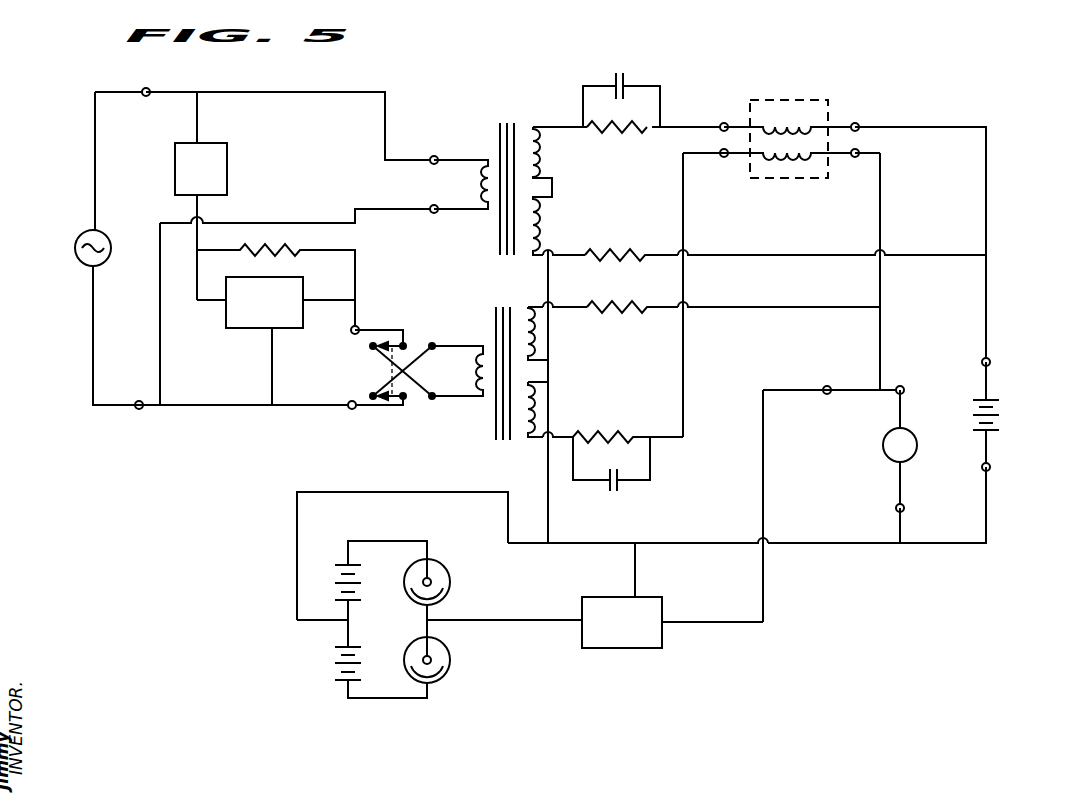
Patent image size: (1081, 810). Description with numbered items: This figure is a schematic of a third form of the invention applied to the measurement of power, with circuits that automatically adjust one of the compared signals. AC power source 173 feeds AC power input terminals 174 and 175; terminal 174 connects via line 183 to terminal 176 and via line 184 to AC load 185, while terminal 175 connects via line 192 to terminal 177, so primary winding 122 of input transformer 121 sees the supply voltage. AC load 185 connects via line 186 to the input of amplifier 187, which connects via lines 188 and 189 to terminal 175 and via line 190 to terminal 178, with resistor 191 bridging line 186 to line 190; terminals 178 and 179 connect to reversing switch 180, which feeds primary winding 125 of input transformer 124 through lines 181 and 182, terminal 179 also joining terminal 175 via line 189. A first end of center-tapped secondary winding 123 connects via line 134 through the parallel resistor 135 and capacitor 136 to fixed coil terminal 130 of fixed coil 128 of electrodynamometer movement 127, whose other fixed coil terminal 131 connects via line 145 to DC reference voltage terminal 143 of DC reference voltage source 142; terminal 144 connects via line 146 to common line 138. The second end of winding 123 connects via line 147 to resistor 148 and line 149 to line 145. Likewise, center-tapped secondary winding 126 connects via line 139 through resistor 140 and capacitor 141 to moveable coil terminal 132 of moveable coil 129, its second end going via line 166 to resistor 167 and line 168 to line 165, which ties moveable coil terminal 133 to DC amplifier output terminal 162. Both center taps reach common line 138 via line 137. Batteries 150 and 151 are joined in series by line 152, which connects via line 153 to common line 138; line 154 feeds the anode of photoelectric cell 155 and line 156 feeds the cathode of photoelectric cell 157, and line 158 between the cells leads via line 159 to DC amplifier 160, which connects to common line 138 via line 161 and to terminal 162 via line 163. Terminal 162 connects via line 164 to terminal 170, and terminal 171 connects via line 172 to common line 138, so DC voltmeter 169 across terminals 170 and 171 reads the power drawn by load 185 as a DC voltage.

The input transformer 121 is at (498, 132).
The primary winding 122 is at (488, 210).
The center-tapped secondary winding 123 is at (538, 127).
The input transformer 124 is at (480, 324).
The primary winding 125 is at (486, 405).
The center-tapped secondary winding 126 is at (536, 306).
The electrodynamometer movement 127 is at (826, 104).
The fixed coil 128 is at (792, 120).
The moveable coil 129 is at (798, 160).
The fixed coil terminal 130 is at (724, 123).
The fixed coil terminal 131 is at (856, 124).
The moveable coil terminal 132 is at (725, 160).
The moveable coil terminal 133 is at (857, 151).
The line 134 is at (616, 128).
The resistor 135 is at (627, 130).
The capacitor 136 is at (623, 86).
The line 137 is at (550, 516).
The common line 138 is at (720, 542).
The line 139 is at (562, 437).
The resistor 140 is at (614, 437).
The capacitor 141 is at (618, 480).
The DC reference voltage source 142 is at (998, 417).
The DC reference voltage terminal 143 is at (990, 362).
The DC reference voltage terminal 144 is at (991, 471).
The line 145 is at (986, 227).
The line 146 is at (986, 518).
The line 147 is at (569, 255).
The resistor 148 is at (618, 255).
The line 149 is at (796, 253).
The battery 150 is at (332, 569).
The battery 151 is at (334, 660).
The line 152 is at (354, 609).
The line 153 is at (407, 492).
The line 154 is at (392, 541).
The photoelectric cell 155 is at (450, 584).
The line 156 is at (412, 698).
The photoelectric cell 157 is at (451, 672).
The line 158 is at (430, 617).
The line 159 is at (576, 636).
The DC amplifier 160 is at (620, 596).
The line 161 is at (636, 570).
The DC amplifier output terminal 162 is at (827, 390).
The line 163 is at (765, 621).
The line 164 is at (871, 392).
The line 165 is at (882, 344).
The line 166 is at (569, 309).
The resistor 167 is at (628, 307).
The line 168 is at (800, 305).
The DC voltmeter 169 is at (882, 445).
The DC voltage measurement terminal 170 is at (900, 388).
The DC voltage measurement terminal 171 is at (895, 508).
The line 172 is at (896, 526).
The AC power source 173 is at (74, 248).
The AC power input terminal 174 is at (146, 86).
The AC power input terminal 175 is at (143, 410).
The terminal 176 is at (439, 156).
The terminal 177 is at (431, 204).
The terminal 178 is at (352, 335).
The terminal 179 is at (352, 405).
The reversing switch 180 is at (406, 398).
The line 181 is at (445, 325).
The line 182 is at (476, 386).
The line 183 is at (290, 91).
The line 184 is at (200, 124).
The AC load 185 is at (228, 174).
The line 186 is at (197, 300).
The amplifier 187 is at (261, 330).
The line 188 is at (274, 382).
The line 189 is at (259, 408).
The line 190 is at (330, 302).
The resistor 191 is at (300, 250).
The line 192 is at (313, 224).